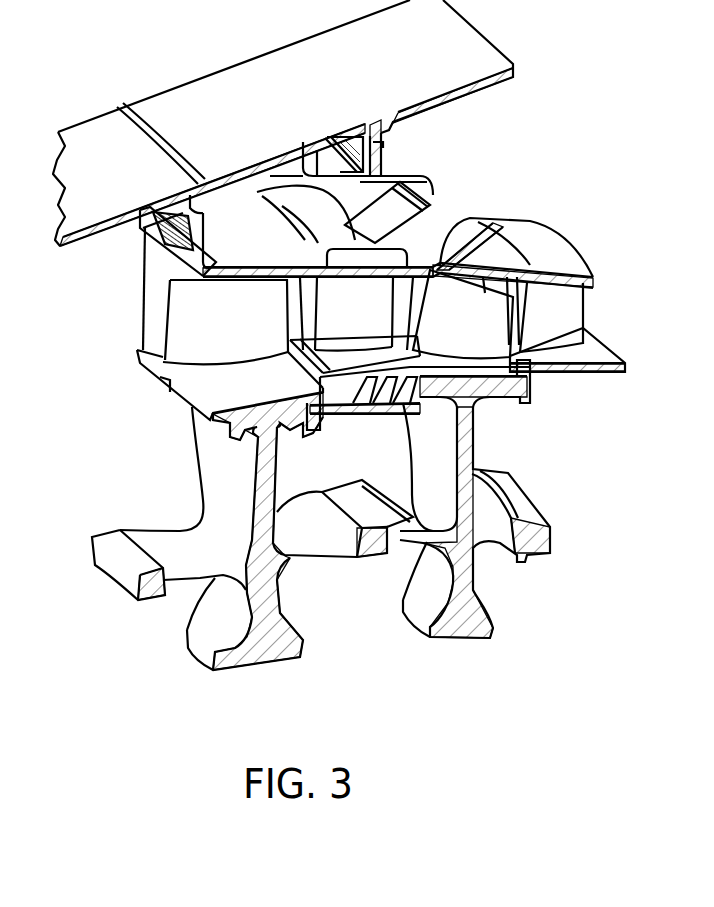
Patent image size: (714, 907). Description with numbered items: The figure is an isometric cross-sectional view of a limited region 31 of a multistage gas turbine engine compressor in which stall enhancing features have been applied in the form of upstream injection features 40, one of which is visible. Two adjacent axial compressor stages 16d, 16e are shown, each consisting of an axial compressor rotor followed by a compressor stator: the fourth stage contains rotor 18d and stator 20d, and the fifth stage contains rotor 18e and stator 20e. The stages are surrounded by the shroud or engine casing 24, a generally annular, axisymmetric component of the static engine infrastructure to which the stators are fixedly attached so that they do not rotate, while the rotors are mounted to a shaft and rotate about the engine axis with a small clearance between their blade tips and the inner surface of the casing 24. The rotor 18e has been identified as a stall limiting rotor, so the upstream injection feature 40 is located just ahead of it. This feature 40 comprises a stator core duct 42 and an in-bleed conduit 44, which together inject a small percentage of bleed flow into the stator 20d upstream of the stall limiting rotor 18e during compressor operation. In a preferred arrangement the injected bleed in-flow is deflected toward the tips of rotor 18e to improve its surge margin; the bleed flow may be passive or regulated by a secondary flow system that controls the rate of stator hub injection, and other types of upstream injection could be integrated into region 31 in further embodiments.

The engine casing 24 is at (82, 136).
The stator core duct 42 is at (472, 136).
The region 31 is at (315, 146).
The in-bleed conduit 44 is at (403, 214).
The compressor rotor 18d is at (251, 334).
The compressor stator 20d is at (380, 327).
The stall limiting rotor 18e is at (489, 338).
The compressor stator 20e is at (578, 324).
The upstream injection feature 40 is at (222, 271).
The compressor stage 16d is at (390, 682).
The compressor stage 16e is at (550, 682).